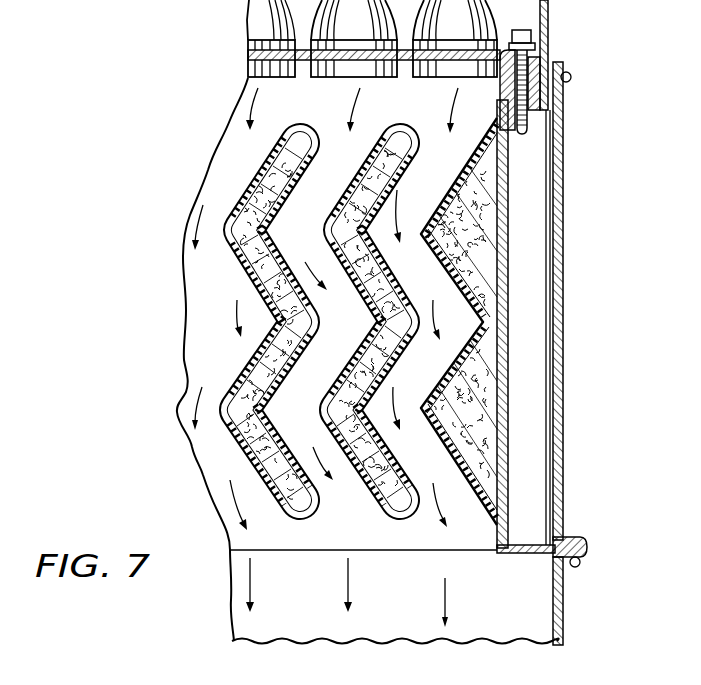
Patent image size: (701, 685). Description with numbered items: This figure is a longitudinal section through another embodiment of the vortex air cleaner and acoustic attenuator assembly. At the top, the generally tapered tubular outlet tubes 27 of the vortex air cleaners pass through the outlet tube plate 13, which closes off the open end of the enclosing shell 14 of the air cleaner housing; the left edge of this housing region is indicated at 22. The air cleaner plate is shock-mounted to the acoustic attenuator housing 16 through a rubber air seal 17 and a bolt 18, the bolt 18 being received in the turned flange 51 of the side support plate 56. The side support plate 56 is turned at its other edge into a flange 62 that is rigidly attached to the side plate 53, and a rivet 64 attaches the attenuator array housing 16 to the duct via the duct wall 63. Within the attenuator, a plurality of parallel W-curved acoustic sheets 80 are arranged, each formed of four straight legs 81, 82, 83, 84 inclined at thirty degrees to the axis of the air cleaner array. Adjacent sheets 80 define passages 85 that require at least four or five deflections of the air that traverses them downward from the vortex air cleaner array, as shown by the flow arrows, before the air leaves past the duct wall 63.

The outlet tube plate 13 is at (262, 54).
The enclosing shell 14 is at (547, 43).
The acoustic attenuator housing 16 is at (568, 248).
The rubber air seal 17 is at (500, 97).
The bolt 18 is at (525, 32).
The heat exchanger tube 22 is at (240, 22).
The outlet tube 27 is at (368, 24).
The flange 51 is at (543, 110).
The side plate 53 is at (563, 170).
The side support plate 56 is at (508, 322).
The flange 62 is at (520, 543).
The duct wall 63 is at (562, 607).
The rivet 64 is at (573, 537).
The W-curved acoustic sheet 80 is at (243, 176).
The straight leg 81 is at (294, 198).
The straight leg 82 is at (330, 256).
The straight leg 83 is at (354, 357).
The straight leg 84 is at (330, 437).
The passage 85 is at (457, 166).